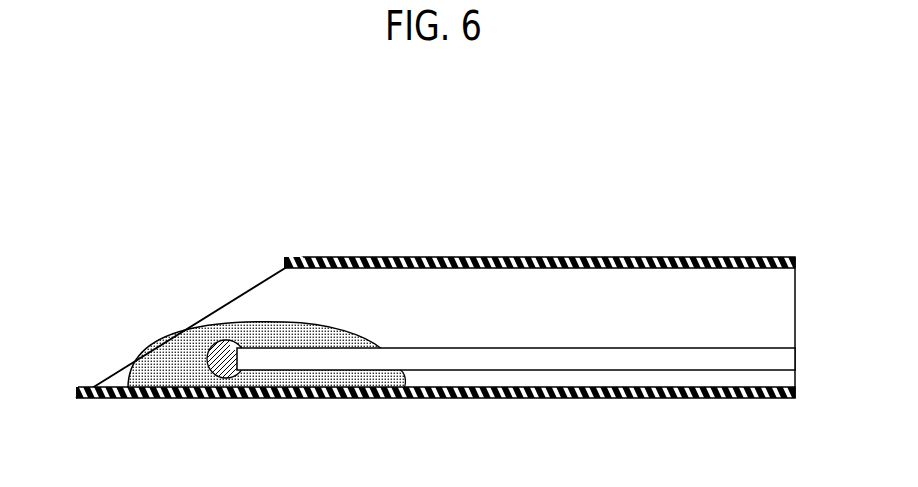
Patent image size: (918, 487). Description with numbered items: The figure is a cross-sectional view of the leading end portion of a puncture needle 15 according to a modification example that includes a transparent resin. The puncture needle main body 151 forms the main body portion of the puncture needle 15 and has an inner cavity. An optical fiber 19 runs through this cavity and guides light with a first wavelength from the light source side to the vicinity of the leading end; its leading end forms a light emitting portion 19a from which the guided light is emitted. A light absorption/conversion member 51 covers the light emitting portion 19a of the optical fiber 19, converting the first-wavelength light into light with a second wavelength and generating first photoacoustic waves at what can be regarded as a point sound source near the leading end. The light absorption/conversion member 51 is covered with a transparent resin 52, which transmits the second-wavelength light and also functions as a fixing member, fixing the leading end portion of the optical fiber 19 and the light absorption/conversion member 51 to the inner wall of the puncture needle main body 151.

The puncture needle 15 is at (632, 178).
The puncture needle main body 151 is at (340, 257).
The optical fiber 19 is at (637, 347).
The light emitting portion 19a is at (208, 352).
The light absorption/conversion member 51 is at (170, 338).
The transparent resin 52 is at (153, 377).